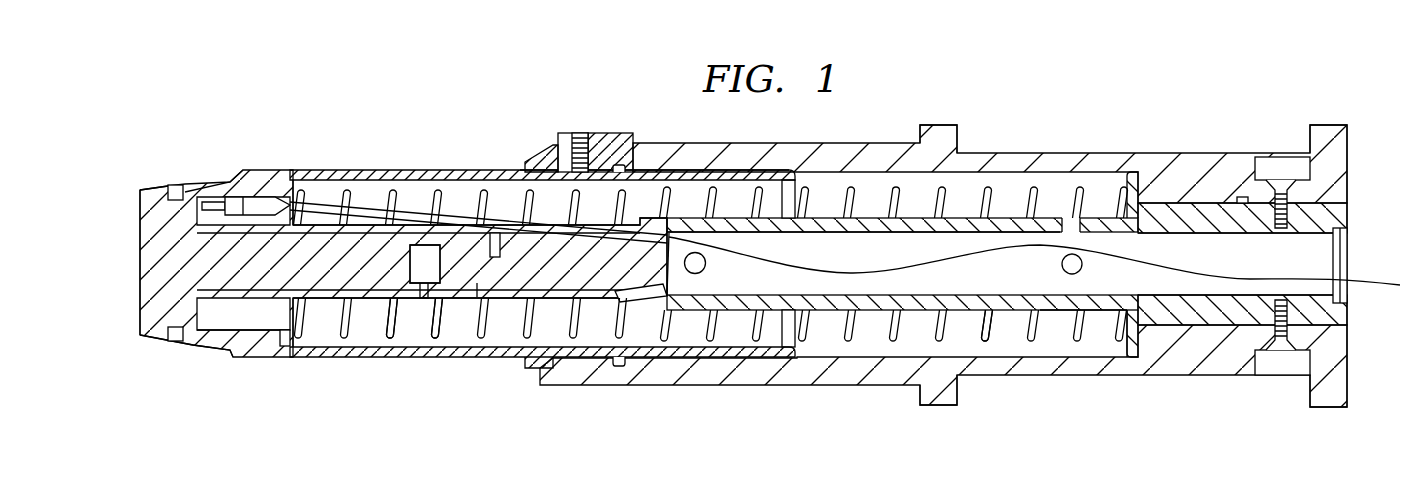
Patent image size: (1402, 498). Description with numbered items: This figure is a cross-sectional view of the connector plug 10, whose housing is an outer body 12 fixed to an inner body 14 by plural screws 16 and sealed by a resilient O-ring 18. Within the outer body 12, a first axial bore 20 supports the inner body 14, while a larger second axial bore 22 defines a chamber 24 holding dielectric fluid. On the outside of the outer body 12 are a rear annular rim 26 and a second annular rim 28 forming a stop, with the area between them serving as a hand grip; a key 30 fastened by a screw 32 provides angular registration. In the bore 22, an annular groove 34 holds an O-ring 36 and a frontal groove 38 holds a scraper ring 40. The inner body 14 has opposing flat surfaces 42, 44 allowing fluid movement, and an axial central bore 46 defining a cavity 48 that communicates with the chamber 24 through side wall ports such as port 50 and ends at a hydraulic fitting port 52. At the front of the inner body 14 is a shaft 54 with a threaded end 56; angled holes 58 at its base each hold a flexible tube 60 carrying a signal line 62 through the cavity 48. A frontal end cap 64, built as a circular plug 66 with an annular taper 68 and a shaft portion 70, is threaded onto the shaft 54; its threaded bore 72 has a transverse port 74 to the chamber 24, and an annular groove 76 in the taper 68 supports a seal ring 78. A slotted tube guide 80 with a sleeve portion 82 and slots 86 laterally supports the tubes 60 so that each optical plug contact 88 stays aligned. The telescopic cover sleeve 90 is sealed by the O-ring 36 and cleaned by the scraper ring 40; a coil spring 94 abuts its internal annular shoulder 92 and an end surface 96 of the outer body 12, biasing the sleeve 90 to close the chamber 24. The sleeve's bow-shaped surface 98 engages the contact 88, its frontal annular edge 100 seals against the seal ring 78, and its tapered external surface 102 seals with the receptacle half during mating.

The connector plug 10 is at (484, 84).
The outer body 12 is at (1000, 157).
The inner body 14 is at (1185, 218).
The screws 16 is at (1272, 160).
The O-ring 18 is at (1242, 197).
The first axial bore 20 is at (1242, 330).
The second axial bore 22 is at (1097, 357).
The chamber 24 is at (872, 195).
The annular rim 26 is at (1330, 125).
The second annular rim 28 is at (940, 126).
The key 30 is at (618, 133).
The screw 32 is at (580, 133).
The annular groove 34 is at (635, 170).
The O-ring 36 is at (620, 366).
The frontal groove 38 is at (520, 170).
The scraper ring 40 is at (540, 160).
The flat surface 42 is at (875, 232).
The flat surface 44 is at (835, 300).
The axial central bore 46 is at (1218, 240).
The cavity 48 is at (841, 266).
The side wall port 50 is at (1080, 232).
The hydraulic fitting port 52 is at (1350, 246).
The shaft 54 is at (546, 275).
The threaded end 56 is at (451, 278).
The angled holes 58 is at (680, 287).
The flexible tube 60 is at (410, 207).
The signal line 62 is at (985, 271).
The frontal end cap 64 is at (138, 285).
The circular plug 66 is at (153, 275).
The annular taper 68 is at (145, 189).
The shaft portion 70 is at (291, 275).
The threaded bore 72 is at (410, 262).
The transverse port 74 is at (425, 300).
The annular groove 76 is at (153, 334).
The seal ring 78 is at (170, 186).
The slotted tube guide 80 is at (462, 327).
The sleeve portion 82 is at (210, 347).
The slots 86 is at (365, 325).
The optical plug contact 88 is at (253, 199).
The telescopic cover sleeve 90 is at (345, 171).
The internal annular shoulder 92 is at (285, 331).
The coil spring 94 is at (1002, 318).
The end surface 96 is at (1140, 318).
The bow-shaped surface 98 is at (258, 331).
The frontal annular edge 100 is at (190, 182).
The tapered external surface 102 is at (185, 342).